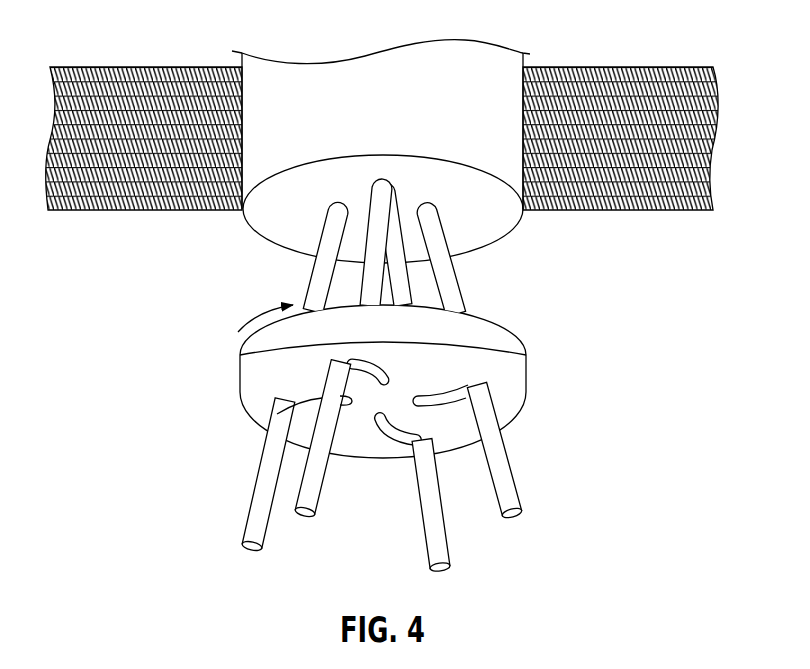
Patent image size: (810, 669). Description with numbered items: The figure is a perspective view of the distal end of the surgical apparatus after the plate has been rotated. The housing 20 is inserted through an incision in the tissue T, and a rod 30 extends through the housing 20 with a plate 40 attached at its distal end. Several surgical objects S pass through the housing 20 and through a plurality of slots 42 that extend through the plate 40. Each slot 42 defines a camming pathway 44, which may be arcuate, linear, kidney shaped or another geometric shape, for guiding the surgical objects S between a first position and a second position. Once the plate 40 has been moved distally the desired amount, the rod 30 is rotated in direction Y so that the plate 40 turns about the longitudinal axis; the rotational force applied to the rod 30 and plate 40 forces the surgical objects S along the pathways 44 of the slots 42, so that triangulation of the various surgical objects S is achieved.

The housing 20 is at (534, 57).
The rod 30 is at (361, 375).
The plate 40 is at (527, 372).
The slots 42 is at (458, 402).
The camming pathway 44 is at (302, 412).
The tissue T is at (652, 68).
The surgical objects S is at (437, 250).
The direction of rotation Y is at (261, 307).